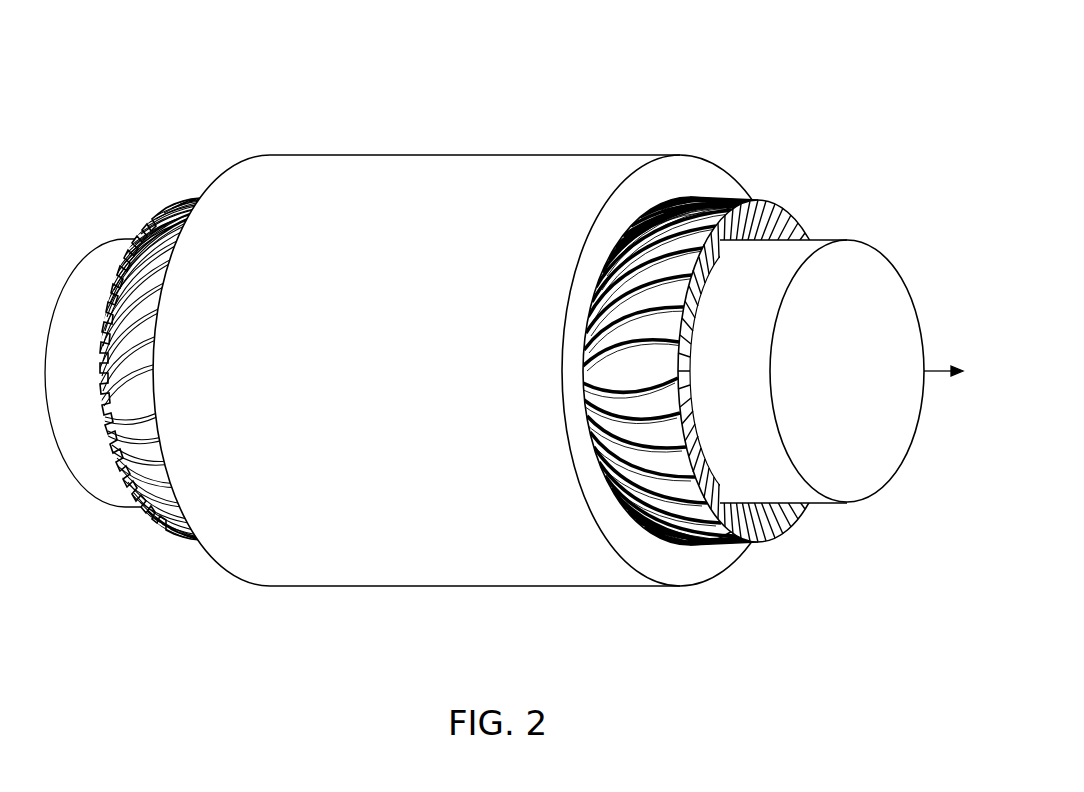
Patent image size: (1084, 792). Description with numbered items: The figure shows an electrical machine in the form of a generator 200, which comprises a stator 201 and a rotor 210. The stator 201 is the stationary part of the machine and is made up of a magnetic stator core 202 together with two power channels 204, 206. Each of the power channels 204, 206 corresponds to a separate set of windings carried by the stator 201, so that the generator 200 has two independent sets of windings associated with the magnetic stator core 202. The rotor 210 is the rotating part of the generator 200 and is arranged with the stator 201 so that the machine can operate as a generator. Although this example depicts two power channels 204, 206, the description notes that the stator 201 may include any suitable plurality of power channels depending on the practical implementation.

The generator 200 is at (504, 379).
The stator 201 is at (352, 144).
The magnetic stator core 202 is at (304, 588).
The power channel 204 is at (637, 520).
The power channel 206 is at (788, 540).
The rotor 210 is at (860, 241).